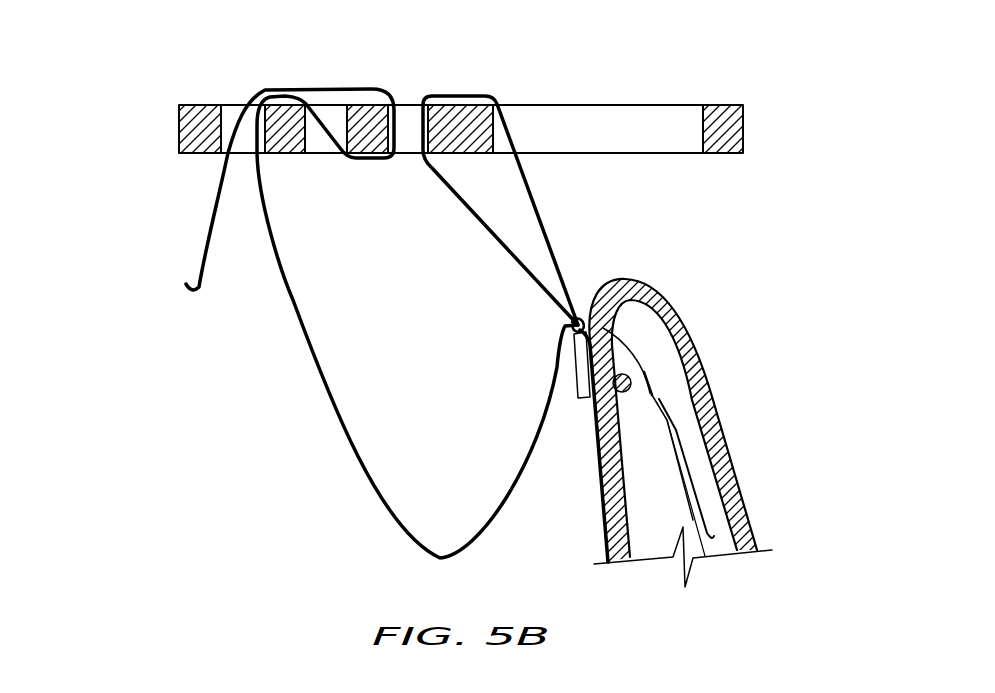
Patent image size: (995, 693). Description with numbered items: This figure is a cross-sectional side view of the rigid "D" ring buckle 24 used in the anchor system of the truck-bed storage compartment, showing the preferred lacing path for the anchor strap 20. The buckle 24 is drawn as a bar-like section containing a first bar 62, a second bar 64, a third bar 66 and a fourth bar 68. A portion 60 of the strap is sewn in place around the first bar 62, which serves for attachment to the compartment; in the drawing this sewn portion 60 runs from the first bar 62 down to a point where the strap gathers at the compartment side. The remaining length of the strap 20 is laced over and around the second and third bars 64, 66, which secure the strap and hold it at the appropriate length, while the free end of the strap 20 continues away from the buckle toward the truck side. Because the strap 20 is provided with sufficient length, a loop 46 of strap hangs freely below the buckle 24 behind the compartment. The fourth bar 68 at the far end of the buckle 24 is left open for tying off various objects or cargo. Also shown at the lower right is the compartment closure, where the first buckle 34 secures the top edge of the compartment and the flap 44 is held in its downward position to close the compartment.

The strap 20 is at (210, 243).
The buckle 24 is at (627, 105).
The first buckle 34 is at (673, 421).
The flap 44 is at (737, 467).
The loop 46 is at (378, 518).
The portion of the strap 60 is at (540, 217).
The first bar 62 is at (463, 120).
The second bar 64 is at (370, 118).
The third bar 66 is at (283, 120).
The fourth bar 68 is at (733, 120).